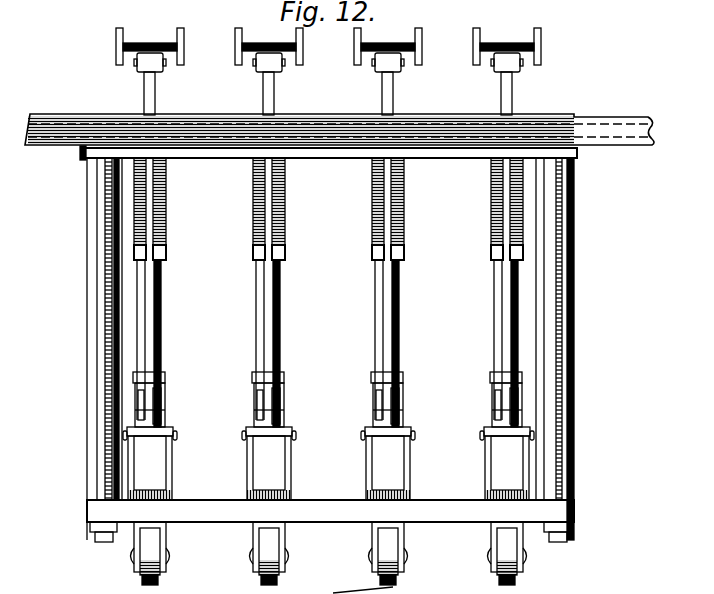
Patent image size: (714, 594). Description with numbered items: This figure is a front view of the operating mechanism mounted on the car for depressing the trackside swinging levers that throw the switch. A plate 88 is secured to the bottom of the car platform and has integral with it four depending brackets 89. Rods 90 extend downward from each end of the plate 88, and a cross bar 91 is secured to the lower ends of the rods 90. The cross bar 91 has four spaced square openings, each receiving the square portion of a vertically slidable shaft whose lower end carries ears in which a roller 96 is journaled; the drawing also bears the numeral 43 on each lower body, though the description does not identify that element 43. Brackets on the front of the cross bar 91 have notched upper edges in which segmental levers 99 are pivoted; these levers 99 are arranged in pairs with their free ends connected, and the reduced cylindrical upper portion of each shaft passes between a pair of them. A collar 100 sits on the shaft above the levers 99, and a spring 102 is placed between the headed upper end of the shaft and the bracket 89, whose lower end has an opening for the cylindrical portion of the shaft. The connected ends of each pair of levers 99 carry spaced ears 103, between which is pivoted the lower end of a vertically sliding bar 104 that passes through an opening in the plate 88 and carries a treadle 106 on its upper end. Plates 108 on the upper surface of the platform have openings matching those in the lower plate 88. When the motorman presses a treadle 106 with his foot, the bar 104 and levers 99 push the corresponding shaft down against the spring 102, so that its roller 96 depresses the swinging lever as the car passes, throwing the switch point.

The cylinder 43 is at (502, 453).
The plate 88 is at (340, 150).
The depending bracket 89 is at (166, 257).
The rod 90 is at (100, 258).
The cross bar 91 is at (343, 510).
The roller 96 is at (253, 580).
The segmental lever 99 is at (158, 328).
The collar 100 is at (167, 375).
The spring 102 is at (166, 190).
The ear 103 is at (166, 417).
The vertically sliding bar 104 is at (148, 346).
The treadle 106 is at (186, 34).
The plate 108 is at (312, 116).